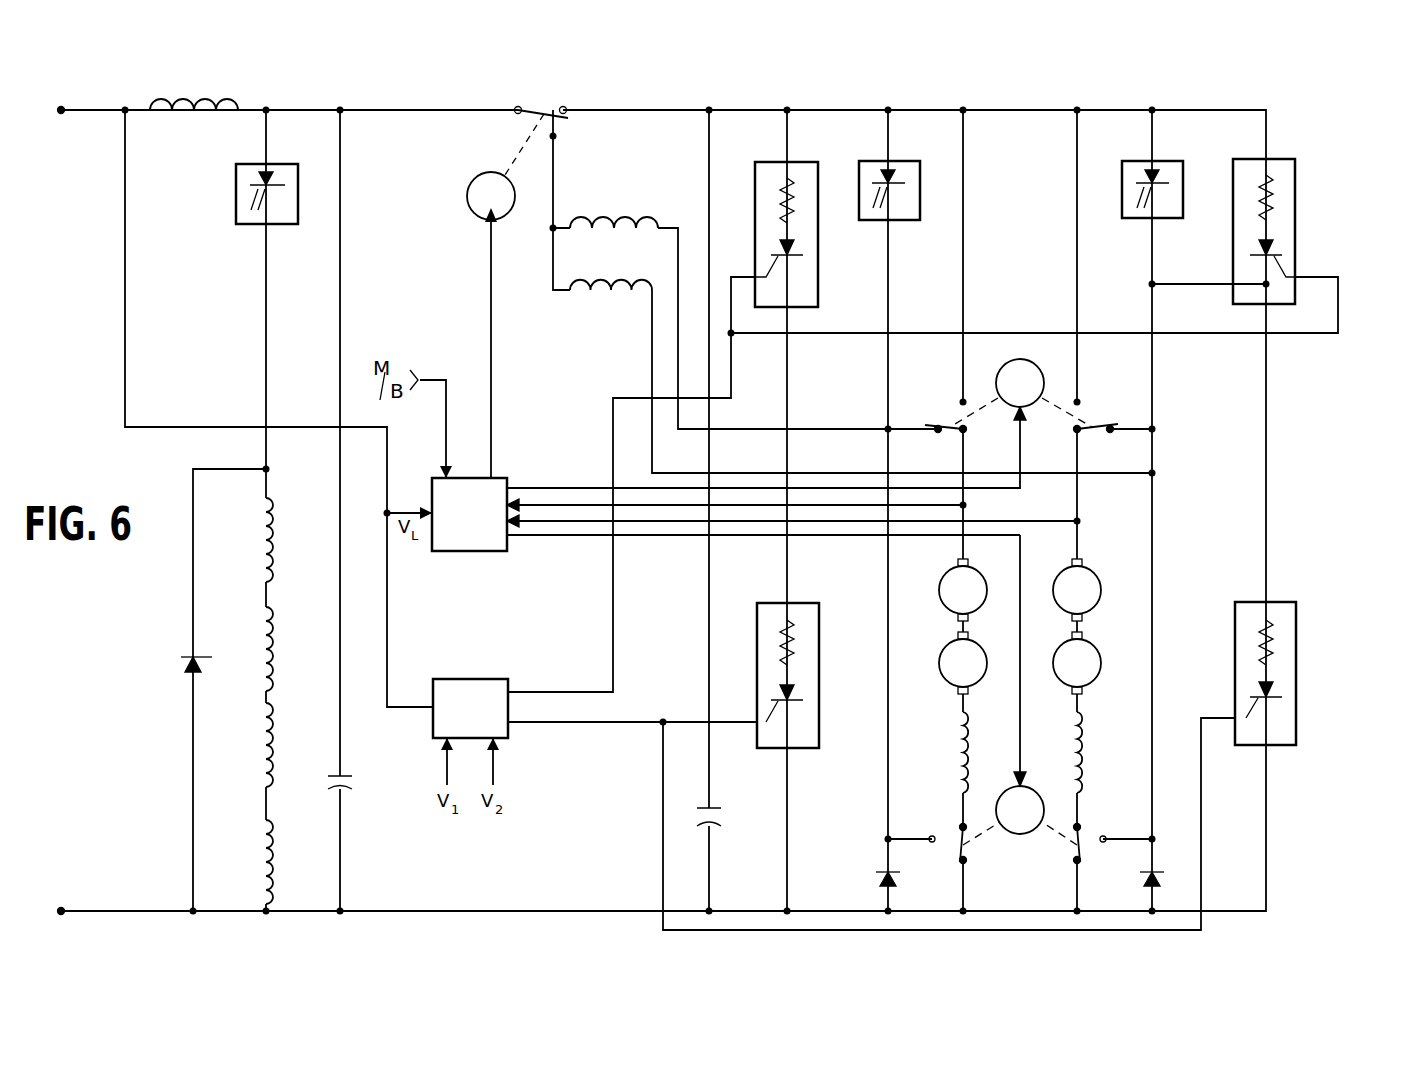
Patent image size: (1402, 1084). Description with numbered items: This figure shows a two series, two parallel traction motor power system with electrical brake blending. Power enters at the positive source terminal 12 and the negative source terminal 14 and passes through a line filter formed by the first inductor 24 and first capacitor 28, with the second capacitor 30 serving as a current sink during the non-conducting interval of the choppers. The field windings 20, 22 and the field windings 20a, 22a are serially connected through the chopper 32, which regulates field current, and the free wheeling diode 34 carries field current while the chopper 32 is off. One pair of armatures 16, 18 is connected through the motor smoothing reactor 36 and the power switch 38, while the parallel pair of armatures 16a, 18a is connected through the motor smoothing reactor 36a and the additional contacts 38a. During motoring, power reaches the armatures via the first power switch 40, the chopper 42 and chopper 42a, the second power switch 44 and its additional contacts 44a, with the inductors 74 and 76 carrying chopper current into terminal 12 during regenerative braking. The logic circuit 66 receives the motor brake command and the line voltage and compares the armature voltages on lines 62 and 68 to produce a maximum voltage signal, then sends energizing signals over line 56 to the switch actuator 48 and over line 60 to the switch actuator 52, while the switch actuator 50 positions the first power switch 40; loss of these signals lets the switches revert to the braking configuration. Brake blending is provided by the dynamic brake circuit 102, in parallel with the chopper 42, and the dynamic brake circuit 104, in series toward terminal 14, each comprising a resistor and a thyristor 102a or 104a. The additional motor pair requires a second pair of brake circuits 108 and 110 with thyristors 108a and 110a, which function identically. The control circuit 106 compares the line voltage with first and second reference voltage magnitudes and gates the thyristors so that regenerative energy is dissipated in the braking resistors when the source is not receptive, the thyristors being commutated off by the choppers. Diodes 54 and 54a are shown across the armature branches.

The first source terminal 12 is at (70, 100).
The second source terminal 14 is at (64, 922).
The first inductor 24 is at (218, 96).
The chopper 32 is at (236, 192).
The first power switch 40 is at (546, 104).
The switch actuator 50 is at (468, 186).
The inductor 74 is at (642, 202).
The inductor 76 is at (624, 280).
The dynamic brake circuit 102 is at (830, 162).
The thyristor 102a is at (808, 264).
The chopper 42 is at (920, 222).
The chopper 42a is at (1142, 222).
The brake circuit 108 is at (1296, 187).
The thyristor 108a is at (1295, 262).
The dynamic brake circuit 104 is at (833, 606).
The thyristor 104a is at (812, 716).
The brake circuit 110 is at (1298, 606).
The thyristor 110a is at (1286, 702).
The control circuit 106 is at (478, 680).
The logic circuit 66 is at (478, 556).
The line 68 is at (566, 496).
The line 60 is at (1020, 488).
The line 62 is at (1048, 538).
The line 56 is at (1020, 734).
The switch actuator 52 is at (1016, 358).
The second power switch 44 is at (944, 404).
The additional set of contacts 44a is at (1096, 412).
The armature 16 is at (941, 578).
The armature 18 is at (938, 656).
The armature 16a is at (1114, 594).
The armature 18a is at (1098, 664).
The motor smoothing reactor 36 is at (990, 748).
The motor smoothing reactor 36a is at (1100, 762).
The power switch 38 is at (945, 830).
The additional set of contacts 38a is at (1096, 834).
The switch actuator 48 is at (1024, 834).
The diode 54 is at (874, 878).
The diode 54a is at (1150, 876).
The field winding 20 is at (288, 548).
The field winding 22 is at (288, 656).
The field winding 20a is at (286, 762).
The field winding 22a is at (286, 868).
The free wheeling diode 34 is at (180, 658).
The first capacitor 28 is at (352, 780).
The second capacitor 30 is at (740, 820).